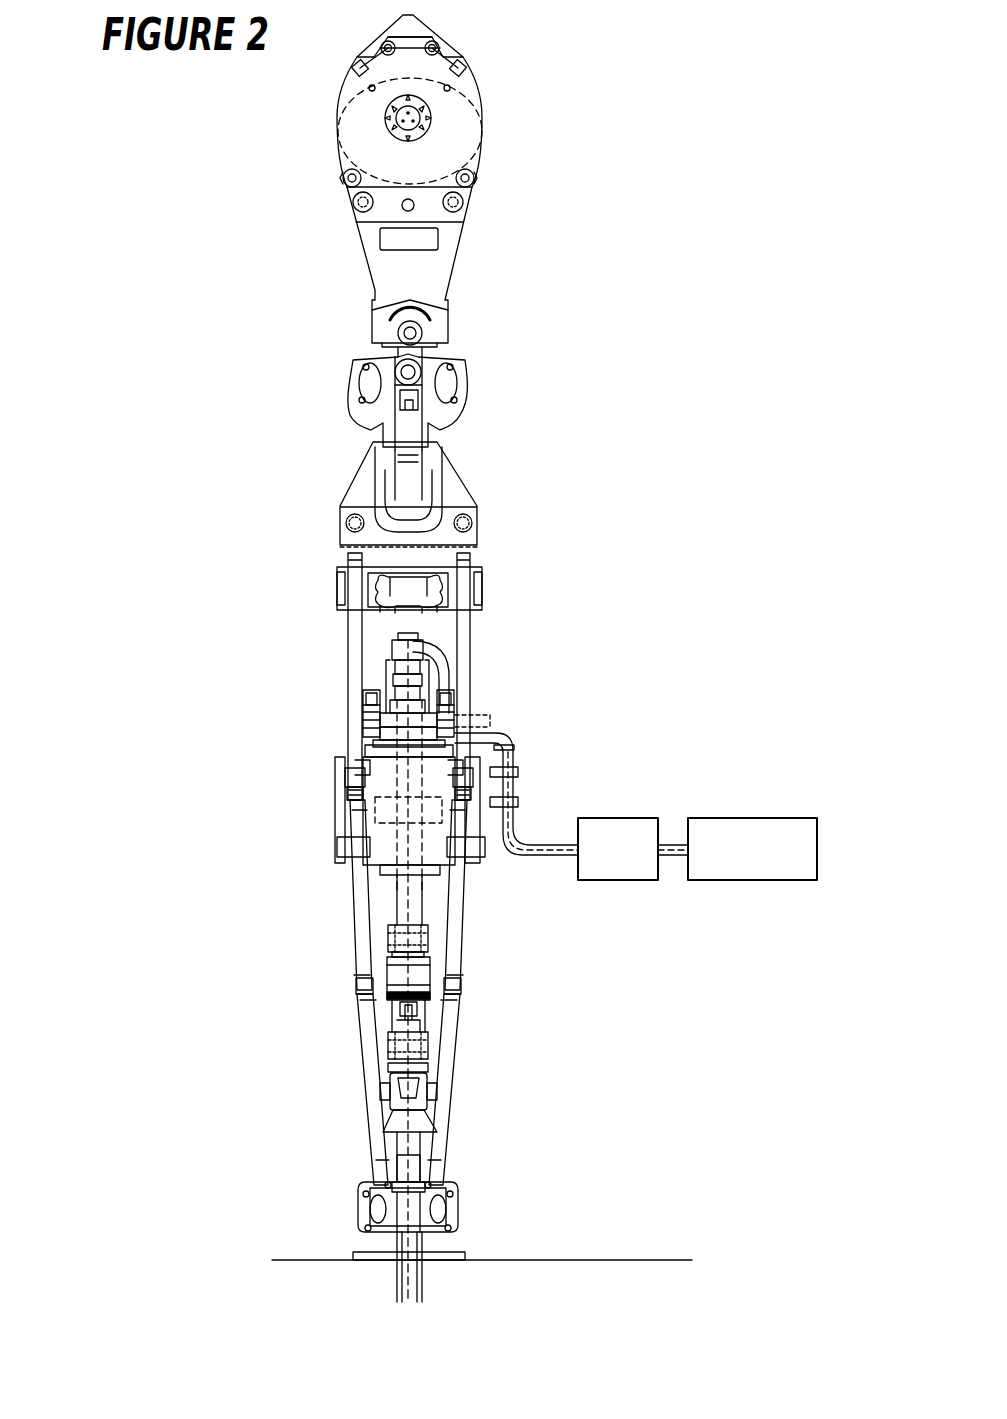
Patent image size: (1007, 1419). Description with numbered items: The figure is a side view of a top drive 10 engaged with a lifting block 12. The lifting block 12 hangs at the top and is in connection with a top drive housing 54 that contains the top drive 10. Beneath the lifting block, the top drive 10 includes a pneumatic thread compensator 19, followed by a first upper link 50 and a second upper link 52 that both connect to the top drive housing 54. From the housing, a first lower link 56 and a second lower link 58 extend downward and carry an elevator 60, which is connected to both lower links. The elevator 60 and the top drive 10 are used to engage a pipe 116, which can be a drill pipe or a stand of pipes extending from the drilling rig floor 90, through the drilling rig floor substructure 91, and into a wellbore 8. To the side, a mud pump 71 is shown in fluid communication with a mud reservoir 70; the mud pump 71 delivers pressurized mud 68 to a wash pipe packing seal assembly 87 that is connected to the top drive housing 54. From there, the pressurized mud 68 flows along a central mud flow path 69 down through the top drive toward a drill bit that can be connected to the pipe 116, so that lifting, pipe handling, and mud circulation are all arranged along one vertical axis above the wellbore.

The wellbore 8 is at (397, 1285).
The top drive 10 is at (251, 442).
The lifting block 12 is at (408, 15).
The pneumatic thread compensator 19 is at (297, 506).
The first upper link 50 is at (355, 672).
The second upper link 52 is at (465, 672).
The top drive housing 54 is at (440, 855).
The first lower link 56 is at (368, 1043).
The second lower link 58 is at (450, 1043).
The elevator 60 is at (458, 1215).
The pressurized mud 68 is at (540, 843).
The central mud flow path 69 is at (400, 898).
The mud reservoir 70 is at (755, 818).
The mud pump 71 is at (620, 818).
The wash pipe packing seal assembly 87 is at (385, 658).
The drilling rig floor 90 is at (470, 1252).
The drilling rig floor substructure 91 is at (585, 1259).
The pipe 116 is at (422, 1285).